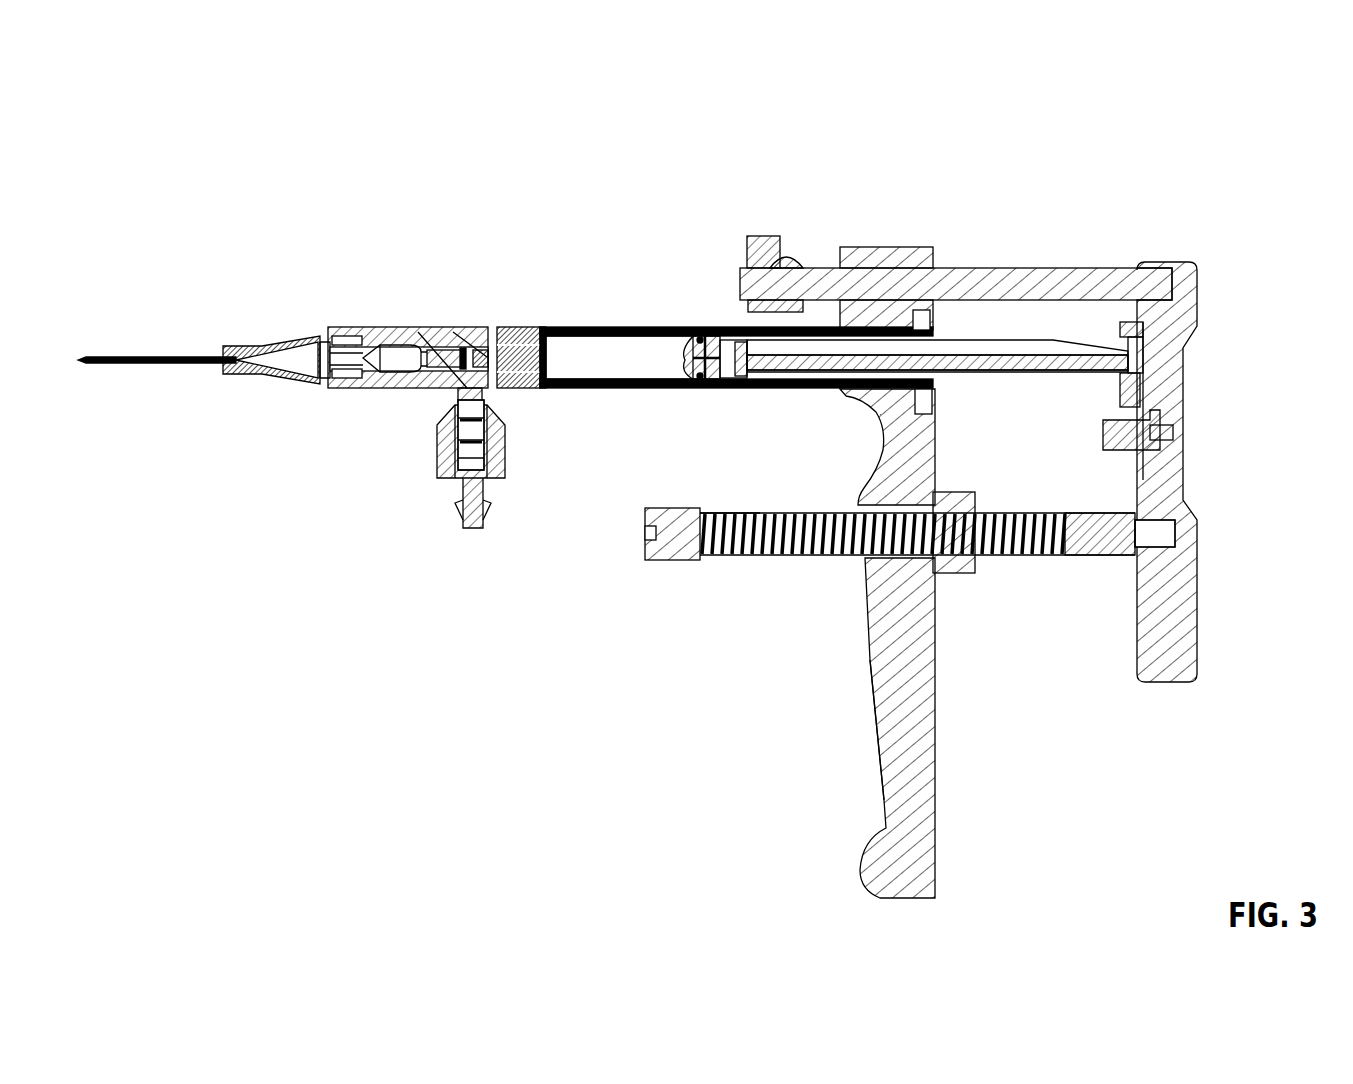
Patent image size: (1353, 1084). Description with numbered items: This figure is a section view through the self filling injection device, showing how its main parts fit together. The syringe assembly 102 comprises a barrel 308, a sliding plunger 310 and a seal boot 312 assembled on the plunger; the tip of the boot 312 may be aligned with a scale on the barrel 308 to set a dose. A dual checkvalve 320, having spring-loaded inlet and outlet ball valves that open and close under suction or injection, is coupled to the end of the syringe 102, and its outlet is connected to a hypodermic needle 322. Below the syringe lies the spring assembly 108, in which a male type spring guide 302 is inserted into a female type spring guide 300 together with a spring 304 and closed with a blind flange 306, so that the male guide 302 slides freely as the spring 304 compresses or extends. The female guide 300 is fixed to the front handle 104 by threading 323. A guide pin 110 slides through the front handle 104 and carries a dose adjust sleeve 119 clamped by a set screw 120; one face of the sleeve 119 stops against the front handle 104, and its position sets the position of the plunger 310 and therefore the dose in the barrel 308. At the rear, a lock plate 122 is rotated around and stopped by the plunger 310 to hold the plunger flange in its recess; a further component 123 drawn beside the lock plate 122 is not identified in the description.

The syringe assembly 102 is at (592, 322).
The front handle 104 is at (935, 797).
The spring assembly 108 is at (822, 573).
The guide pin 110 is at (1067, 290).
The dose adjust sleeve 119 is at (787, 248).
The set screw 120 is at (755, 232).
The lock plate 122 is at (1162, 345).
The bracket 123 is at (1165, 446).
The female type spring guide 300 is at (742, 570).
The male type spring guide 302 is at (1198, 612).
The spring 304 is at (782, 563).
The blind flange 306 is at (673, 560).
The barrel 308 is at (590, 372).
The sliding plunger 310 is at (985, 330).
The seal boot 312 is at (693, 340).
The dual checkvalve 320 is at (420, 333).
The hypodermic needle 322 is at (167, 350).
The threading 323 is at (933, 617).